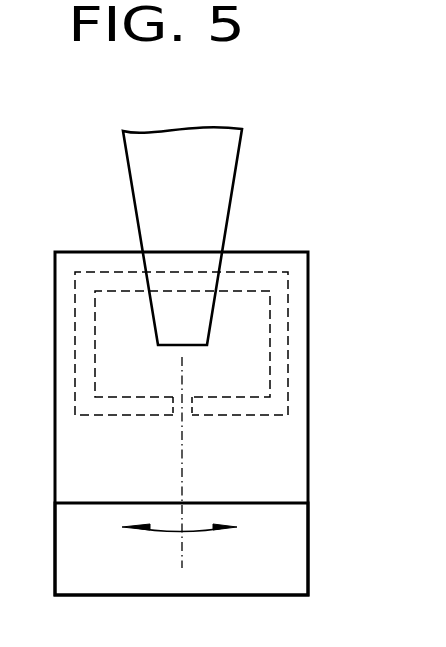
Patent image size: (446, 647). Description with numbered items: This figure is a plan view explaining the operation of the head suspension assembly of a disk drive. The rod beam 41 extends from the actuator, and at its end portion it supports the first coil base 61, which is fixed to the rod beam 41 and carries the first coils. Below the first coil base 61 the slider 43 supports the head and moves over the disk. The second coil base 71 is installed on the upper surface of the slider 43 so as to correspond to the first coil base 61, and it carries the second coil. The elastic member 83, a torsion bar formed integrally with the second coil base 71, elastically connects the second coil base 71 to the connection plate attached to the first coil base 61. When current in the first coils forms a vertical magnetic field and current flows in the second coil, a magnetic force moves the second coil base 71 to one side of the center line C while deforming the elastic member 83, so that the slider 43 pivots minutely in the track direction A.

The rod beam 41 is at (228, 180).
The first coil base 61 is at (302, 470).
The slider 43 is at (302, 568).
The second coil base 71 is at (265, 325).
The elastic member 83 is at (193, 408).
The track direction A is at (150, 531).
The center line C is at (182, 545).